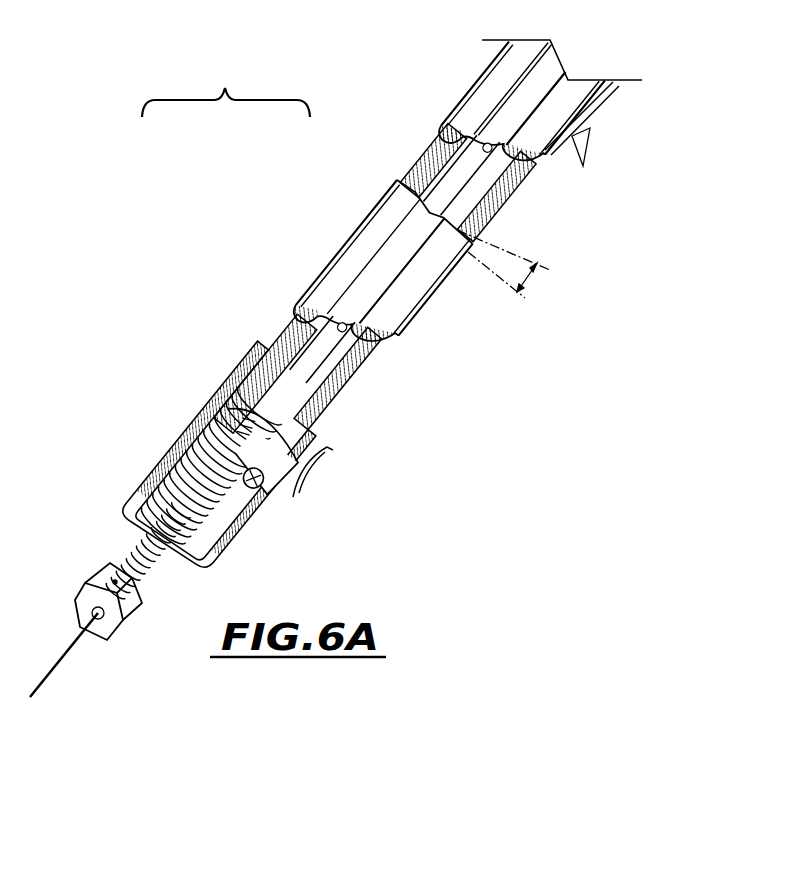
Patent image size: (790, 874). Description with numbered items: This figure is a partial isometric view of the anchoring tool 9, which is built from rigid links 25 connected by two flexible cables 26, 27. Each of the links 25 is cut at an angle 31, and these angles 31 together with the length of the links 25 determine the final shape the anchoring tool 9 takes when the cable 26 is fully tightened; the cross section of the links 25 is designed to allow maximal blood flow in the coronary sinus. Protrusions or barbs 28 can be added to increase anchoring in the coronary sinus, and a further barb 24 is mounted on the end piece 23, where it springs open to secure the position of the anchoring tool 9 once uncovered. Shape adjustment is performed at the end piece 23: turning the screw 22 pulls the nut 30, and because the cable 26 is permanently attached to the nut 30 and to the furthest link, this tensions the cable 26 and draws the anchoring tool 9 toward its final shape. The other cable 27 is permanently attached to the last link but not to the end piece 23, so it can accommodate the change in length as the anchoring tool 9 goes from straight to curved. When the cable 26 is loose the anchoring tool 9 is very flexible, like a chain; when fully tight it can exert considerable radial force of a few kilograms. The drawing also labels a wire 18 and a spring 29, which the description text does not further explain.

The anchoring tool 9 is at (226, 89).
The wire 18 is at (460, 180).
The screw 22 is at (85, 583).
The end piece 23 is at (253, 513).
The barb 24 is at (323, 450).
The rigid links 25 is at (488, 78).
The cable 26 is at (350, 370).
The cable 27 is at (283, 338).
The protrusions or barbs 28 is at (580, 132).
The spring 29 is at (130, 560).
The nut 30 is at (250, 437).
The angle 31 is at (532, 278).